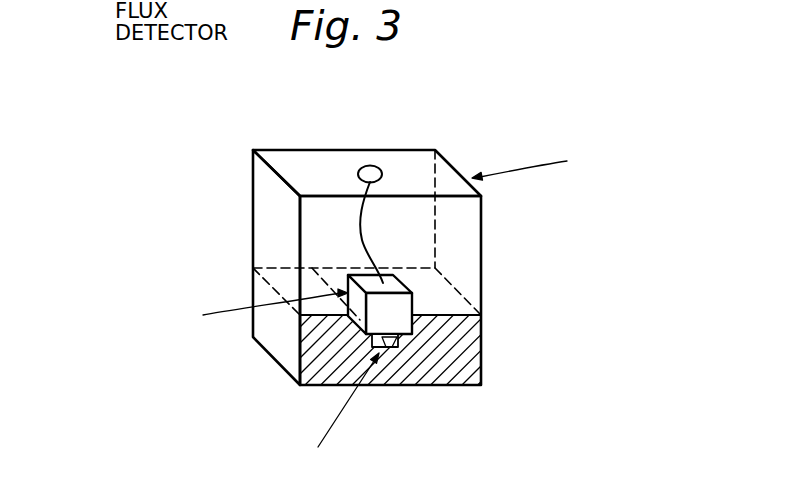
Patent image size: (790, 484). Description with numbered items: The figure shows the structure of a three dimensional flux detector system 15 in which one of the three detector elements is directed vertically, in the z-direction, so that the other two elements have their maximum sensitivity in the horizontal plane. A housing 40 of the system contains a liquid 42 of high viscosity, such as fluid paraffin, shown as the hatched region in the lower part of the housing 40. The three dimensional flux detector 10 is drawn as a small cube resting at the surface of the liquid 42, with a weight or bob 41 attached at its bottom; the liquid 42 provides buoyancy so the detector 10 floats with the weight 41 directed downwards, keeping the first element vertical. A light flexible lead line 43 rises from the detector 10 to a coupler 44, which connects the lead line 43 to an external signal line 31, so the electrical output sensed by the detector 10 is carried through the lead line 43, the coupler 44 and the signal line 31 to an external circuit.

The three dimensional flux detector system 15 is at (480, 142).
The housing 40 is at (482, 258).
The liquid 42 is at (465, 355).
The three dimensional flux detector 10 is at (403, 302).
The weight 41 is at (393, 348).
The lead line 43 is at (367, 233).
The signal line 31 is at (371, 166).
The coupler 44 is at (358, 170).